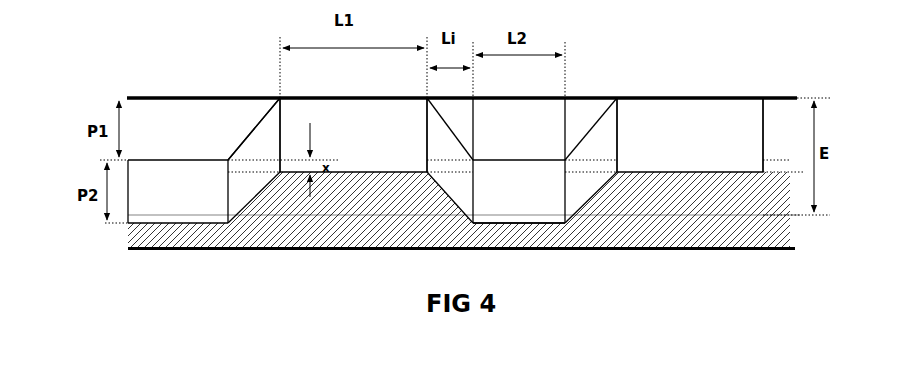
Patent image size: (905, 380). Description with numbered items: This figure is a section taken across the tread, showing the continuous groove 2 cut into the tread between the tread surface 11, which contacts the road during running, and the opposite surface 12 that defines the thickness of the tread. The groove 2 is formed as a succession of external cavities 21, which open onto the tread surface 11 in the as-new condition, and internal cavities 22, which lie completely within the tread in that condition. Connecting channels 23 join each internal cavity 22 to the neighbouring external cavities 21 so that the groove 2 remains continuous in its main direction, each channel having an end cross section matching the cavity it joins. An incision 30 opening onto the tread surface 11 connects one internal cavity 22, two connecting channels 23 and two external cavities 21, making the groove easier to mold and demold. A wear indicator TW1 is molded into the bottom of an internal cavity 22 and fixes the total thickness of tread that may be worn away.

The continuous groove 2 is at (651, 118).
The tread surface 11 is at (192, 94).
The surface defining the thickness of the tread 12 is at (425, 253).
The external cavities 21 is at (367, 125).
The internal cavities 22 is at (187, 188).
The connecting channels 23 is at (263, 152).
The incision 30 is at (210, 127).
The hole bottom width TW1 is at (528, 219).